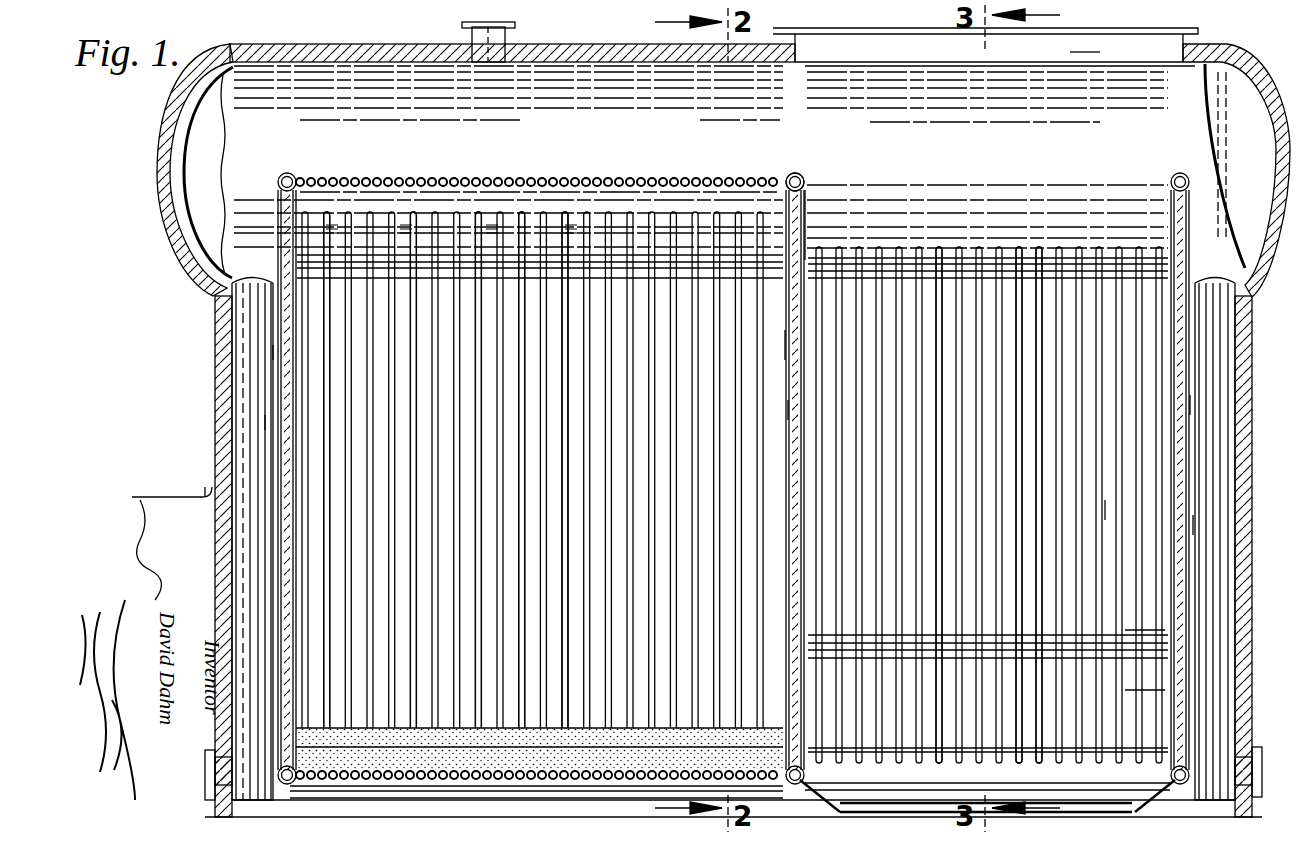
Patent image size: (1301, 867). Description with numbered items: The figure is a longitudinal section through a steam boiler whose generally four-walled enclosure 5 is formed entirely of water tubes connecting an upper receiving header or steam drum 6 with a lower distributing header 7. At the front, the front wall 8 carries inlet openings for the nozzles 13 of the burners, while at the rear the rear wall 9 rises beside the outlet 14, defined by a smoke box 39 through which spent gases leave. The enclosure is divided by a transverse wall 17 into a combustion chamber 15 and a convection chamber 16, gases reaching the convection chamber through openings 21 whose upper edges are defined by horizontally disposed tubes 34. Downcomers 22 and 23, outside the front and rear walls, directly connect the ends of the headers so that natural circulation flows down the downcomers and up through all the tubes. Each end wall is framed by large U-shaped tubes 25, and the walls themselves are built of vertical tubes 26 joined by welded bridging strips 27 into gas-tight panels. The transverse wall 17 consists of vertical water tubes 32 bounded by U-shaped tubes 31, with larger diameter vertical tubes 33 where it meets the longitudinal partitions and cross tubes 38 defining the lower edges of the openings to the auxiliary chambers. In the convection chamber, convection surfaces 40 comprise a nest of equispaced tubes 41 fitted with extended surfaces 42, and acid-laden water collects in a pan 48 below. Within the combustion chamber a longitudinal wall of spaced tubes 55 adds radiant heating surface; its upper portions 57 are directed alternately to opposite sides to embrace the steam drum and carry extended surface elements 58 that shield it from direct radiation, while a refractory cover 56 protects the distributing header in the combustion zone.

The four-walled enclosure 5 is at (170, 310).
The upper receiving header 6 is at (660, 153).
The lower distributing header 7 is at (470, 790).
The front wall 8 is at (272, 352).
The rear wall 9 is at (1190, 404).
The nozzles 13 is at (175, 505).
The outlet 14 is at (1085, 43).
The combustion chamber 15 is at (350, 393).
The convection chamber 16 is at (1118, 447).
The transverse wall 17 is at (807, 222).
The openings 21 is at (1130, 690).
The downcomer 22 is at (250, 333).
The downcomer 23 is at (1212, 318).
The U-shaped tubes 25 is at (278, 210).
The vertical tubes 26 is at (270, 423).
The bridging strips 27 is at (786, 208).
The U-shaped tubes 31 is at (799, 174).
The vertical water tubes 32 is at (806, 245).
The larger diameter vertical tubes 33 is at (783, 350).
The horizontally disposed tubes 34 is at (1130, 636).
The cross tubes 38 is at (790, 412).
The smoke box 39 is at (884, 50).
The convection surfaces 40 is at (1052, 250).
The tubes 41 is at (950, 250).
The extended surfaces 42 is at (1112, 510).
The pan 48 is at (1095, 812).
The wall of tubes 55 is at (533, 222).
The refractory cover 56 is at (545, 750).
The upper portions 57 is at (428, 220).
The extended surface elements 58 is at (350, 222).